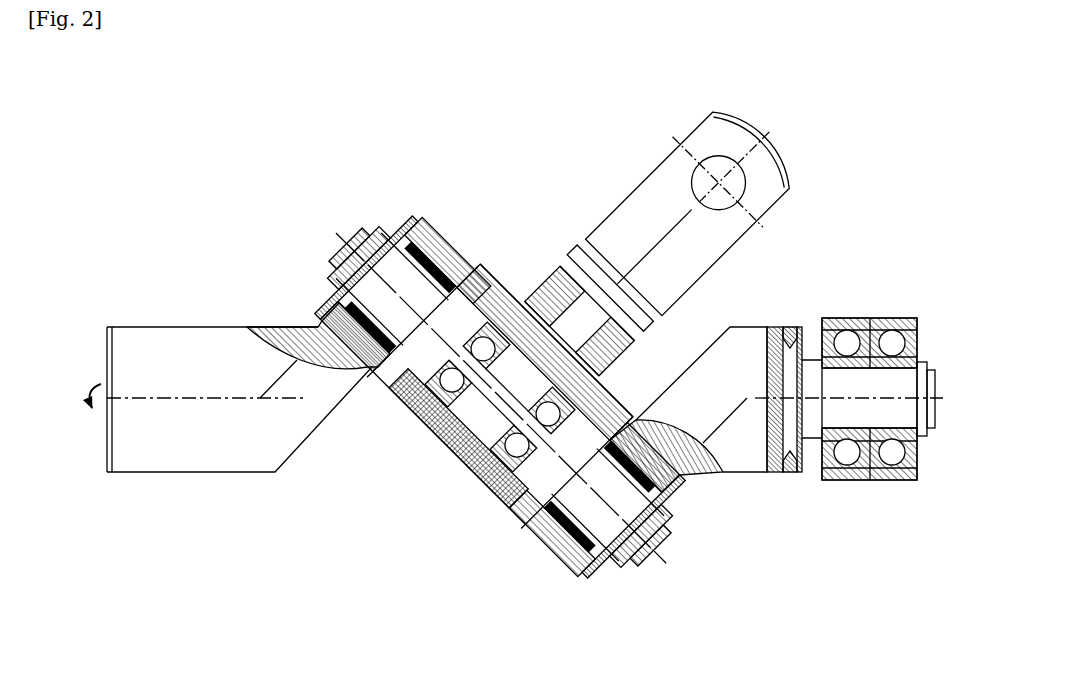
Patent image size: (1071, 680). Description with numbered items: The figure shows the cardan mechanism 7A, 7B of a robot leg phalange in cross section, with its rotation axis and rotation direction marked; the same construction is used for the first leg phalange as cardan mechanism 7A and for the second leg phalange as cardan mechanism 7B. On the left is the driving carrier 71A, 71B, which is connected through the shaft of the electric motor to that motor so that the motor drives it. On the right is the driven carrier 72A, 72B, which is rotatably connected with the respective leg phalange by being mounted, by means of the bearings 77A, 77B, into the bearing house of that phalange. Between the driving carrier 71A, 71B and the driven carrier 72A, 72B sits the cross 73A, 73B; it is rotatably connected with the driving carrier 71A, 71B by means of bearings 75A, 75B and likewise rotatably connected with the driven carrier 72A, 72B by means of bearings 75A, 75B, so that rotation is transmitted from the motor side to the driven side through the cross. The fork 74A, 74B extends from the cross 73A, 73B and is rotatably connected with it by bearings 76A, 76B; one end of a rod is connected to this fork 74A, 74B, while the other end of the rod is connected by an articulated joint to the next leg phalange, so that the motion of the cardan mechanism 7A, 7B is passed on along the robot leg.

The cardan mechanism 7A is at (516, 332).
The cardan mechanism 7B is at (303, 198).
The driving carrier 71A is at (239, 432).
The driving carrier 71B is at (199, 454).
The driven carrier 72A is at (776, 470).
The driven carrier 72B is at (736, 440).
The cross 73A is at (490, 395).
The cross 73B is at (435, 450).
The fork 74A is at (665, 217).
The fork 74B is at (659, 190).
The bearings 75A is at (500, 337).
The bearings 75B is at (428, 266).
The bearings 76A is at (501, 299).
The bearings 76B is at (486, 342).
The bearings 77A is at (865, 465).
The bearings 77B is at (855, 476).